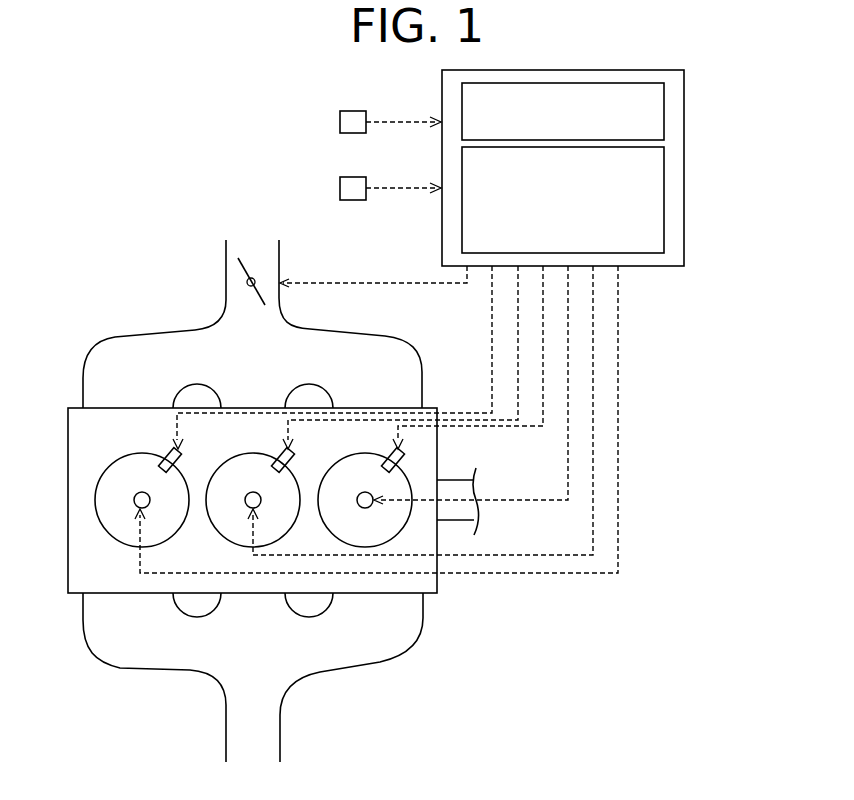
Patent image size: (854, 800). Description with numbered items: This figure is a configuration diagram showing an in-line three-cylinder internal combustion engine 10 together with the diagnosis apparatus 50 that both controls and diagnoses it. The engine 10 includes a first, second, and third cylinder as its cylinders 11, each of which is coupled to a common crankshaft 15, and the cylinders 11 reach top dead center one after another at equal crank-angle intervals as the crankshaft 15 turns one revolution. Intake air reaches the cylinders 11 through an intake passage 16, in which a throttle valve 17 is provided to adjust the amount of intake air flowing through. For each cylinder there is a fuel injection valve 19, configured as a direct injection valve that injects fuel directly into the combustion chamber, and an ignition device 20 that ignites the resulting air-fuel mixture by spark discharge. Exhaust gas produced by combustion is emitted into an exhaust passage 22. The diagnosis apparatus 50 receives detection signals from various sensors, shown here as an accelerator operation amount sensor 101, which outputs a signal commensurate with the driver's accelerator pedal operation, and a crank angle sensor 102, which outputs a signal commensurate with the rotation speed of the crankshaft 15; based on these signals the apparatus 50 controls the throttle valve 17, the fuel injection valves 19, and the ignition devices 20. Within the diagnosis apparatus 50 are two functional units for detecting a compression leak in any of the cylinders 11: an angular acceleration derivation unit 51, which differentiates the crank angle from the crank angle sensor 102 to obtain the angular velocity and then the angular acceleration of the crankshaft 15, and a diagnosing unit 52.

The internal combustion engine 10 is at (452, 618).
The cylinders 11 is at (134, 538).
The crankshaft 15 is at (452, 480).
The intake passage 16 is at (180, 333).
The throttle valve 17 is at (259, 263).
The fuel injection valves 19 is at (166, 452).
The ignition devices 20 is at (135, 493).
The exhaust passage 22 is at (150, 669).
The diagnosis apparatus 50 is at (662, 71).
The angular acceleration derivation unit 51 is at (666, 185).
The diagnosing unit 52 is at (666, 118).
The accelerator operation amount sensor 101 is at (339, 122).
The crank angle sensor 102 is at (339, 188).